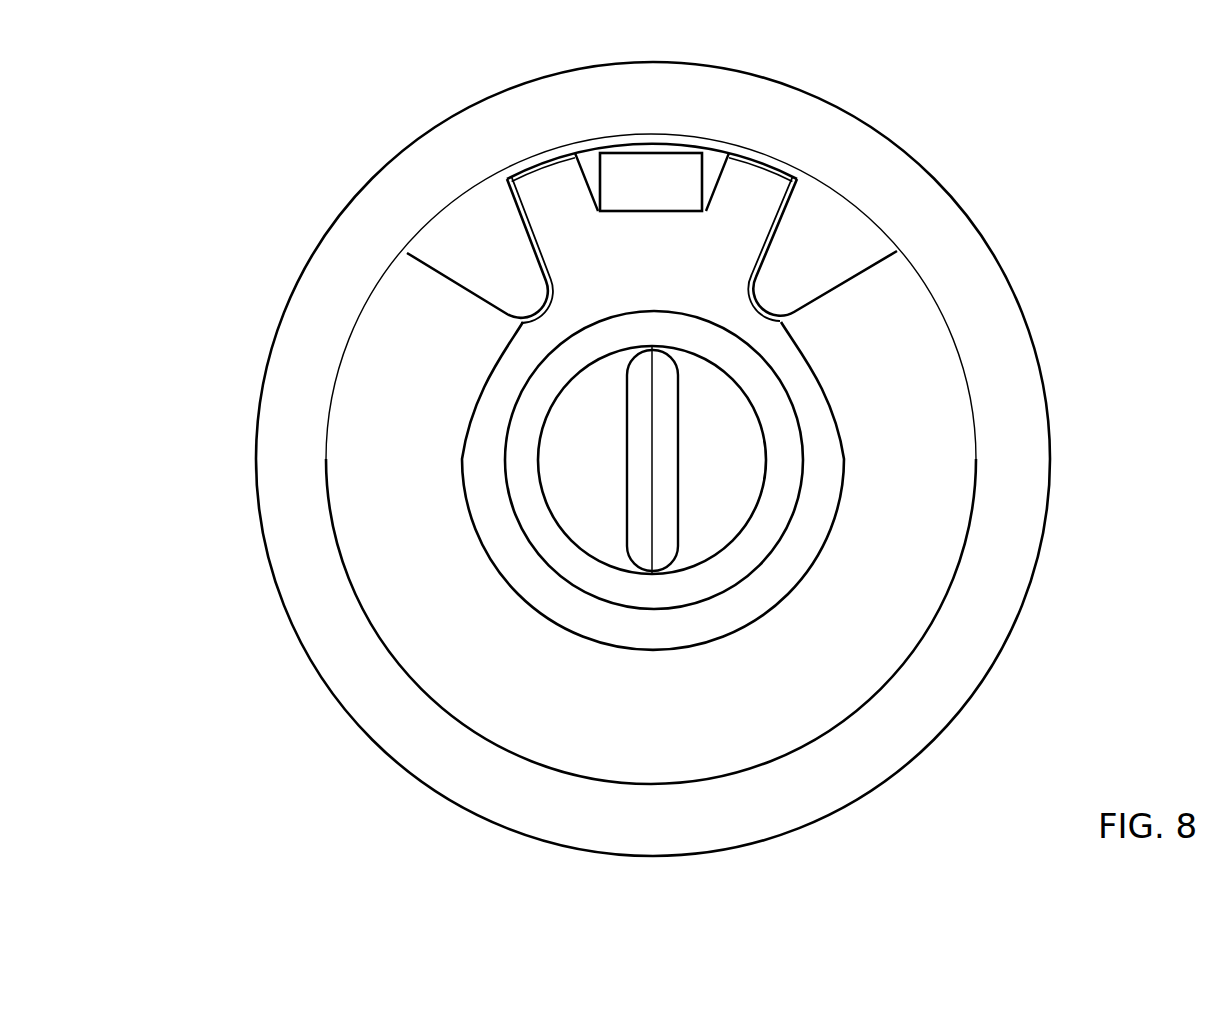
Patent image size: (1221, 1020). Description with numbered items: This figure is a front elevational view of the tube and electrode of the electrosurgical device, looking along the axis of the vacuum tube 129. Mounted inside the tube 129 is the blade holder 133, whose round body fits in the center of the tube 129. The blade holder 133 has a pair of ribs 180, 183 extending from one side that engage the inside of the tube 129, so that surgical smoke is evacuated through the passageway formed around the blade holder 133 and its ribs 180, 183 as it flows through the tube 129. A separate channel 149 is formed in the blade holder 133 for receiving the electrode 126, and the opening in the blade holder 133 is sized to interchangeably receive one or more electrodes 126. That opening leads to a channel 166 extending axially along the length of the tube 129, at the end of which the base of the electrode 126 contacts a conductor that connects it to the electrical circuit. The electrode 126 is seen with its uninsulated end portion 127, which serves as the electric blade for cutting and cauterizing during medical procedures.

The vacuum tube 129 is at (990, 332).
The rib 180 is at (545, 186).
The rib 183 is at (760, 182).
The blade holder 133 is at (820, 457).
The channel 149 is at (523, 406).
The electrode 126 is at (525, 437).
The uninsulated end portion 127 is at (643, 505).
The channel 166 is at (782, 517).